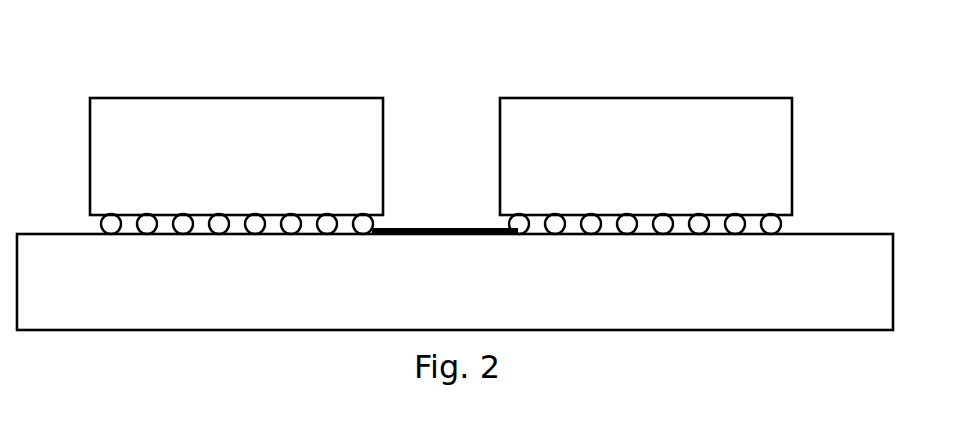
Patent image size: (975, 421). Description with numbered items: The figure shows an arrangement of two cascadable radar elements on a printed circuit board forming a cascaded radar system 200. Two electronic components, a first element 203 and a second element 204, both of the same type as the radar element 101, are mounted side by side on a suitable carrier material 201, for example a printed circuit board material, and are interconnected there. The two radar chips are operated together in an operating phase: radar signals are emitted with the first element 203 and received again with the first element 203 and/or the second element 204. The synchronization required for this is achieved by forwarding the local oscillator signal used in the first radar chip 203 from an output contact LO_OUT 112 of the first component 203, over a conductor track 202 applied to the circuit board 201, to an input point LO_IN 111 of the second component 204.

The cascaded radar system 200 is at (459, 68).
The carrier material 201 is at (893, 278).
The conductor track 202 is at (428, 237).
The first element 203 is at (229, 98).
The second element 204 is at (650, 98).
The radar element 101 is at (501, 119).
The input point LO_IN 111 is at (521, 237).
The output contact LO_OUT 112 is at (376, 222).